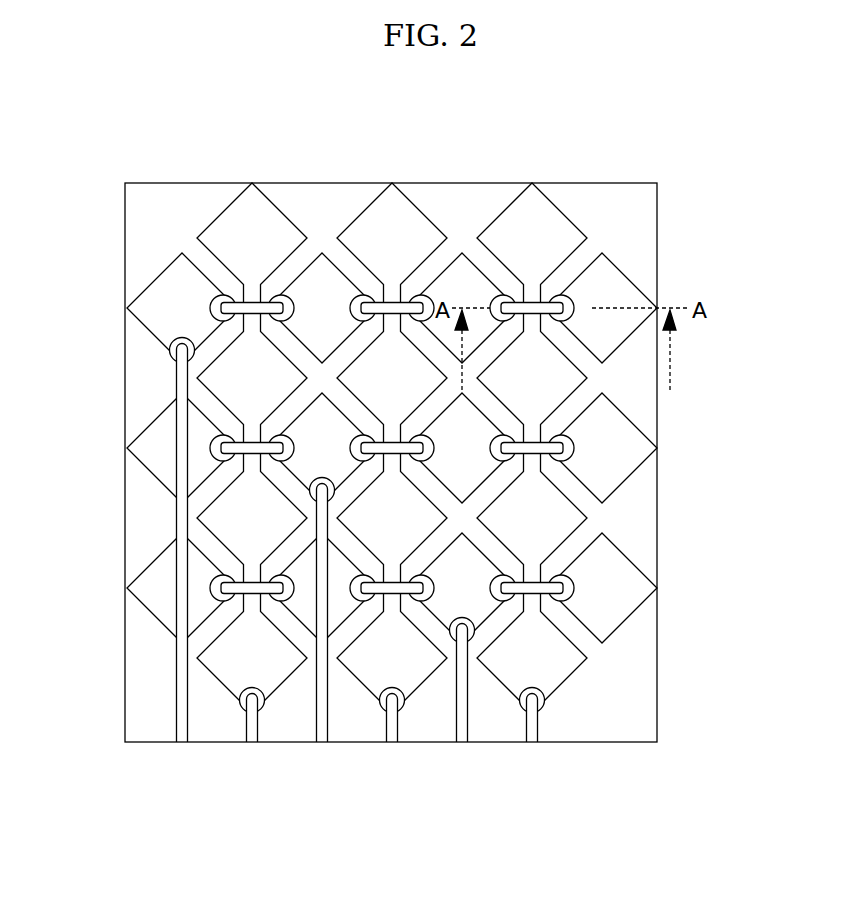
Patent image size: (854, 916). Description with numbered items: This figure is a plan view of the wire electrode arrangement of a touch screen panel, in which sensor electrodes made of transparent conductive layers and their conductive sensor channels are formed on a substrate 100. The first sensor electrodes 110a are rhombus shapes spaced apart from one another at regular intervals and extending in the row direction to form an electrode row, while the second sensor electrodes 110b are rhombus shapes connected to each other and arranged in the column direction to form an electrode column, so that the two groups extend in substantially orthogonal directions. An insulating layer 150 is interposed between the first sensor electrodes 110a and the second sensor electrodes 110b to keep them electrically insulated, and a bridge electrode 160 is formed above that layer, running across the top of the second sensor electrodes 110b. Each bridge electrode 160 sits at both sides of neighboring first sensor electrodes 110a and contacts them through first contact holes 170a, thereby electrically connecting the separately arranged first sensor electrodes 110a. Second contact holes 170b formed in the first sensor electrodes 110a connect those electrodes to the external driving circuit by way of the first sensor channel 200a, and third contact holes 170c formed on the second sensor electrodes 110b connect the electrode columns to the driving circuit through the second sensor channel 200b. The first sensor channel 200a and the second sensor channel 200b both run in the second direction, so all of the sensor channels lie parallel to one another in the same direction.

The substrate 100 is at (591, 183).
The first sensor electrodes 110a is at (162, 282).
The second sensor electrodes 110b is at (246, 214).
The insulating layer 150 is at (641, 226).
The bridge electrode 160 is at (264, 298).
The first contact holes 170a is at (211, 306).
The second contact holes 170b is at (171, 356).
The third contact holes 170c is at (545, 707).
The first sensor channel 200a is at (176, 701).
The second sensor channel 200b is at (246, 727).